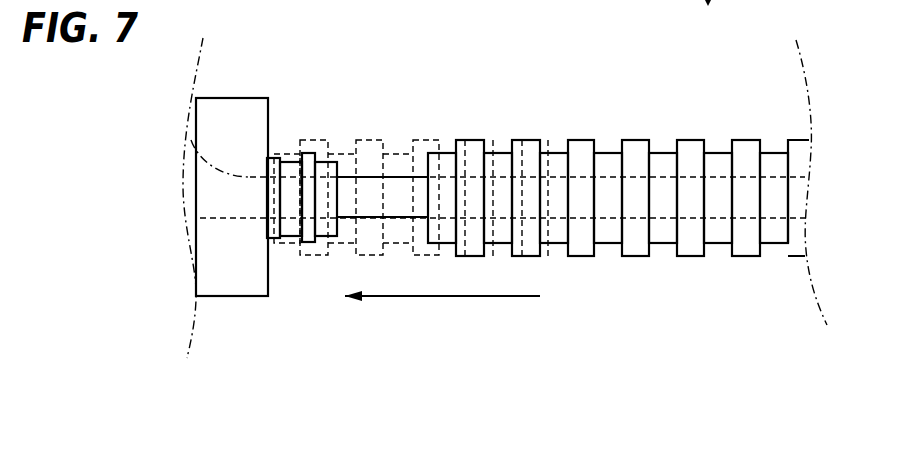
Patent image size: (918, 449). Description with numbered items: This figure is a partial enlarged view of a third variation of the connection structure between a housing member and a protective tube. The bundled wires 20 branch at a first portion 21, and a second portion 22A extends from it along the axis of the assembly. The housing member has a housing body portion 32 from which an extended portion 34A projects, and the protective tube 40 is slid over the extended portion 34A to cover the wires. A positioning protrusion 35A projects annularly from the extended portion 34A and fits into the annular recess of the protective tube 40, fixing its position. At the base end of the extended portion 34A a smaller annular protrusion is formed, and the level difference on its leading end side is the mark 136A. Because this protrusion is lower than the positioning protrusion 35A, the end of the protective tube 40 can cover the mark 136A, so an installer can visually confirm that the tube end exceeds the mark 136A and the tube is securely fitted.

The wires 20 is at (773, 220).
The first portion 21 is at (236, 219).
The second portion 22A is at (607, 176).
The housing body portion 32 is at (237, 297).
The extended portion 34A is at (338, 237).
The positioning protrusion 35A is at (305, 152).
The protective tube 40 is at (371, 139).
The mark 136A is at (280, 223).